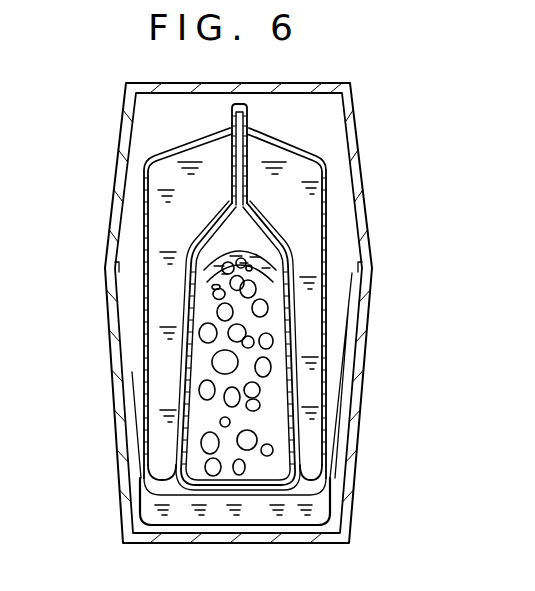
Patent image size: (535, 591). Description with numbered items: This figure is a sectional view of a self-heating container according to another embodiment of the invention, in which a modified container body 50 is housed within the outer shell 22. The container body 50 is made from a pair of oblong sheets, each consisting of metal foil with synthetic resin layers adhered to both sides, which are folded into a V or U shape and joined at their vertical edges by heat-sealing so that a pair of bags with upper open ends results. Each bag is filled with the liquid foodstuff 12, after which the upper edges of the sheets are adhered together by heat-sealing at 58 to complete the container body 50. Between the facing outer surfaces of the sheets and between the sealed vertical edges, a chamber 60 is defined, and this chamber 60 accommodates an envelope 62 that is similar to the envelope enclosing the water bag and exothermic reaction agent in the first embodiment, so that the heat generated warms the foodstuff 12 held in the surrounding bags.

The liquid foodstuff 12 is at (306, 182).
The outer shell 22 is at (100, 300).
The container body 50 is at (332, 193).
The heat seal 58 is at (246, 110).
The chamber 60 is at (233, 223).
The envelope 62 is at (290, 383).